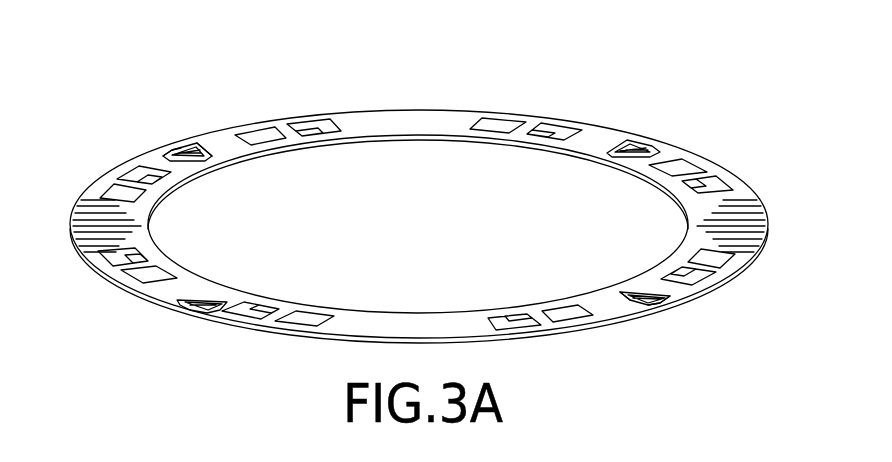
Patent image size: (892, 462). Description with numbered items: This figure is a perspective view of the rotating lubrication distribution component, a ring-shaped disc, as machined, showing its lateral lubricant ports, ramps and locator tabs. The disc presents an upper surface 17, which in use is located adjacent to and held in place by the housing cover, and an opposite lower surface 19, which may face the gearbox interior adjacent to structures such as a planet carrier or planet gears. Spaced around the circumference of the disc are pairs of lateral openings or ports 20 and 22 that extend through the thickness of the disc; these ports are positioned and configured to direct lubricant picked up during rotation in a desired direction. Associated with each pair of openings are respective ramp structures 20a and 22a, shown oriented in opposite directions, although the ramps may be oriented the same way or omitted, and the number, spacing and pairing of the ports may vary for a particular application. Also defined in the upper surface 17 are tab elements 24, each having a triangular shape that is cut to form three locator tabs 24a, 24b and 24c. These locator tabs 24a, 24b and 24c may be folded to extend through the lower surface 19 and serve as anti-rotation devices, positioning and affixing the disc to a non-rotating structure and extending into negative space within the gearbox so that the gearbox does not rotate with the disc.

The upper surface 17 is at (430, 117).
The lower surface 19 is at (432, 137).
The lateral opening 20 is at (142, 190).
The ramp structure 20a is at (510, 312).
The lateral opening 22 is at (122, 273).
The ramp structure 22a is at (558, 132).
The tab element 24 is at (197, 314).
The locator tab 24a is at (183, 152).
The locator tab 24b is at (213, 150).
The locator tab 24c is at (212, 163).